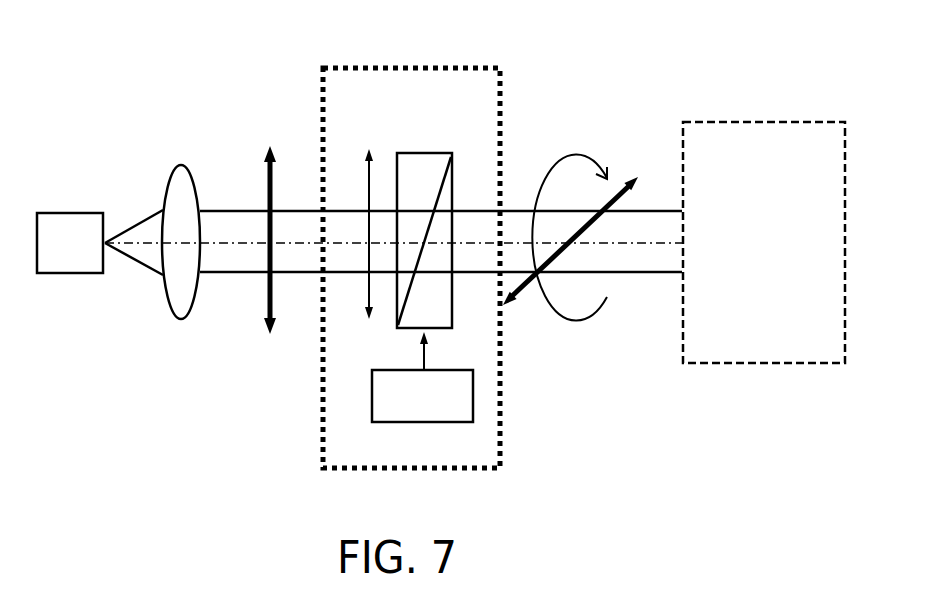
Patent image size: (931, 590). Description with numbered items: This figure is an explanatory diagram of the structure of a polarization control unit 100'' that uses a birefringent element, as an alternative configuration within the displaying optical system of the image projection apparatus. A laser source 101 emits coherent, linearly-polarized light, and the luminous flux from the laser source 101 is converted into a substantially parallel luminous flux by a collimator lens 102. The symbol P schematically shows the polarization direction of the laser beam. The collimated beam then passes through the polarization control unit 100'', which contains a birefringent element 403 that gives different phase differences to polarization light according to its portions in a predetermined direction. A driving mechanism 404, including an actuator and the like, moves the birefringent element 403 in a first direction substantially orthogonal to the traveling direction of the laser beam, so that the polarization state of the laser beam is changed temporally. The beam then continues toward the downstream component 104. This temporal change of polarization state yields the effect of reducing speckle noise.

The laser source 101 is at (55, 228).
The collimator lens 102 is at (178, 195).
The polarization direction P is at (263, 197).
The polarization control unit 100'' is at (411, 240).
The birefringent element 403 is at (418, 152).
The driving mechanism 404 is at (422, 402).
The target object 104 is at (770, 122).